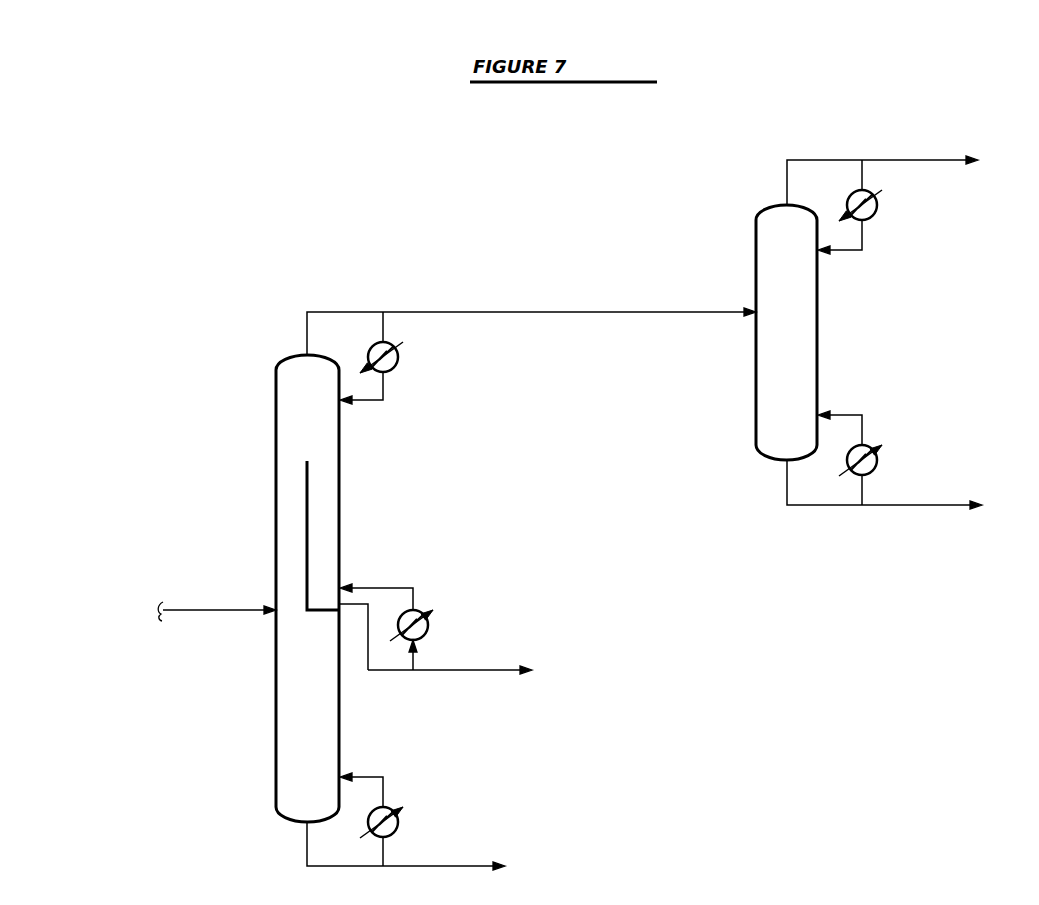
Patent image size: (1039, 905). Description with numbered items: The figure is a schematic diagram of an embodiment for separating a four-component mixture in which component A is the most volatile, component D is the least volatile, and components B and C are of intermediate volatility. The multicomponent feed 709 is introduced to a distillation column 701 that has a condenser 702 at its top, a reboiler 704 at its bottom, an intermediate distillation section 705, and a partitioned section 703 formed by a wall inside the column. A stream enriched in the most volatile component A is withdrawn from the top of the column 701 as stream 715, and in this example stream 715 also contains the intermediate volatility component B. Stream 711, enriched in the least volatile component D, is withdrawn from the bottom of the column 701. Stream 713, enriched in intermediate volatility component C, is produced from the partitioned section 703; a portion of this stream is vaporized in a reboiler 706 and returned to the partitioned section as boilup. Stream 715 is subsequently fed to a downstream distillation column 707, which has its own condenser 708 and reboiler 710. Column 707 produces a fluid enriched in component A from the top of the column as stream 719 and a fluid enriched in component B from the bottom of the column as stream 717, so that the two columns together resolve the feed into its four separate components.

The distillation column 701 is at (276, 447).
The condenser 702 is at (400, 362).
The partitioned section 703 is at (323, 528).
The reboiler 704 is at (400, 820).
The intermediate distillation section 705 is at (293, 543).
The reboiler 706 is at (430, 630).
The downstream distillation column 707 is at (818, 378).
The condenser 708 is at (878, 210).
The multicomponent feed 709 is at (185, 612).
The reboiler 710 is at (880, 462).
The stream enriched in least volatile component D 711 is at (414, 867).
The stream enriched in intermediate volatility component C 713 is at (458, 671).
The stream enriched in most volatile component A 715 is at (476, 313).
The stream enriched in component B 717 is at (900, 506).
The stream enriched in component A 719 is at (915, 161).